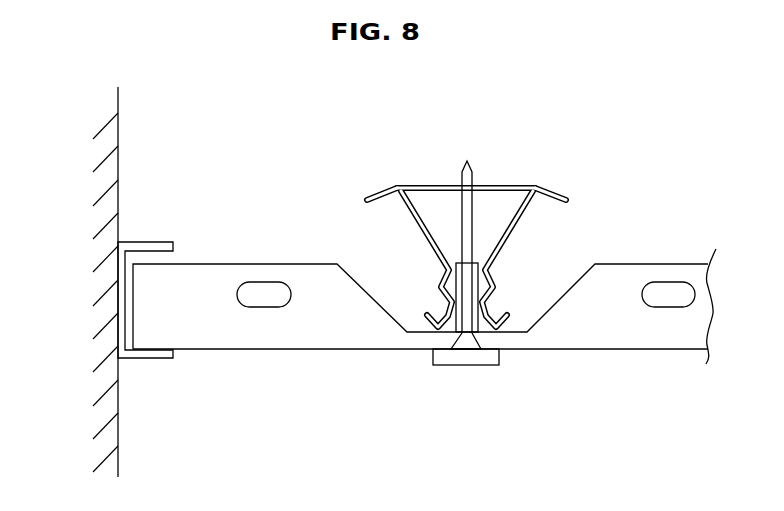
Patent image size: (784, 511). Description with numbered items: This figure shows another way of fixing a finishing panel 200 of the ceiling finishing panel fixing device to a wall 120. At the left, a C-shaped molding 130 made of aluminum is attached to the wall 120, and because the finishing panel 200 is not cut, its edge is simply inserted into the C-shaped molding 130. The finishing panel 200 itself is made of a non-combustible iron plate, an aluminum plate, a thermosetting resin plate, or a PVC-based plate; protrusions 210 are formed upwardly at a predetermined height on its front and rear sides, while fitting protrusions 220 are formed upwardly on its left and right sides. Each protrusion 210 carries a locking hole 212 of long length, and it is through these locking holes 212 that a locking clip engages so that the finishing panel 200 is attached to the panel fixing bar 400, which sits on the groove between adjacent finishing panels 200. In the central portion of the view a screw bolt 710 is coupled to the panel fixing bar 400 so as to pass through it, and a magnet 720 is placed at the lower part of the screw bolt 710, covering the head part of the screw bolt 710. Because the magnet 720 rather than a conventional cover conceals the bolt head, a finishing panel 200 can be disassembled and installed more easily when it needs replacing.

The wall 120 is at (118, 133).
The C-shaped molding 130 is at (147, 243).
The finishing panel 200 is at (424, 358).
The protrusion 210 is at (218, 327).
The locking hole 212 is at (273, 298).
The fitting protrusion 220 is at (481, 290).
The panel fixing bar 400 is at (447, 182).
The screw bolt 710 is at (470, 222).
The magnet 720 is at (465, 365).